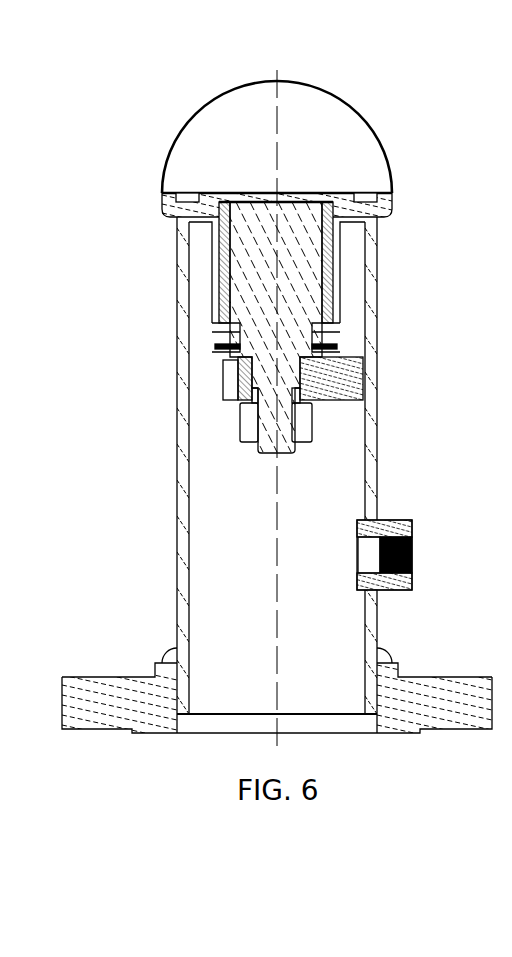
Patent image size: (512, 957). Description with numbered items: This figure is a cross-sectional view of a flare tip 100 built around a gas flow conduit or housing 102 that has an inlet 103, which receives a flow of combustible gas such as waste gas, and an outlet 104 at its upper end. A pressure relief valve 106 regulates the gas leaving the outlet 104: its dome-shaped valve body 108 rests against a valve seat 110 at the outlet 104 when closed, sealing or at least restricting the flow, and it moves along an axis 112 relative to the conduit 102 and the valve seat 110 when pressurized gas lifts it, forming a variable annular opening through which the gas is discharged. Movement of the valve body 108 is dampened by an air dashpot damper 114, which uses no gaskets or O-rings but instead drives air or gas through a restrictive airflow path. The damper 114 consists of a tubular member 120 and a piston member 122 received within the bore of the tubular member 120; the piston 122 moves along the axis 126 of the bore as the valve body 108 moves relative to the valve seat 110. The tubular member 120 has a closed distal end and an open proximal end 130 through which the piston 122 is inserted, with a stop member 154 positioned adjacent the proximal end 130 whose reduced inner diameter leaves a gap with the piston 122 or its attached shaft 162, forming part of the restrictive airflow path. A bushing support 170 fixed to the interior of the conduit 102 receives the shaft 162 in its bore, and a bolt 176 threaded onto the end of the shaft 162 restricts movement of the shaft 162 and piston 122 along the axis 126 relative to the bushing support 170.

The flare tip 100 is at (414, 71).
The gas flow conduit 102 is at (177, 489).
The inlet 103 is at (397, 522).
The outlet 104 is at (350, 242).
The pressure relief valve 106 is at (330, 205).
The valve body 108 is at (339, 129).
The valve seat 110 is at (186, 211).
The axis 112 is at (277, 513).
The air dashpot damper 114 is at (351, 300).
The tubular member 120 is at (216, 268).
The piston member 122 is at (242, 290).
The axis of the bore 126 is at (277, 612).
The proximal end 130 is at (341, 335).
The stop member 154 is at (208, 359).
The shaft 162 is at (260, 377).
The bushing support 170 is at (351, 377).
The bolt 176 is at (246, 427).